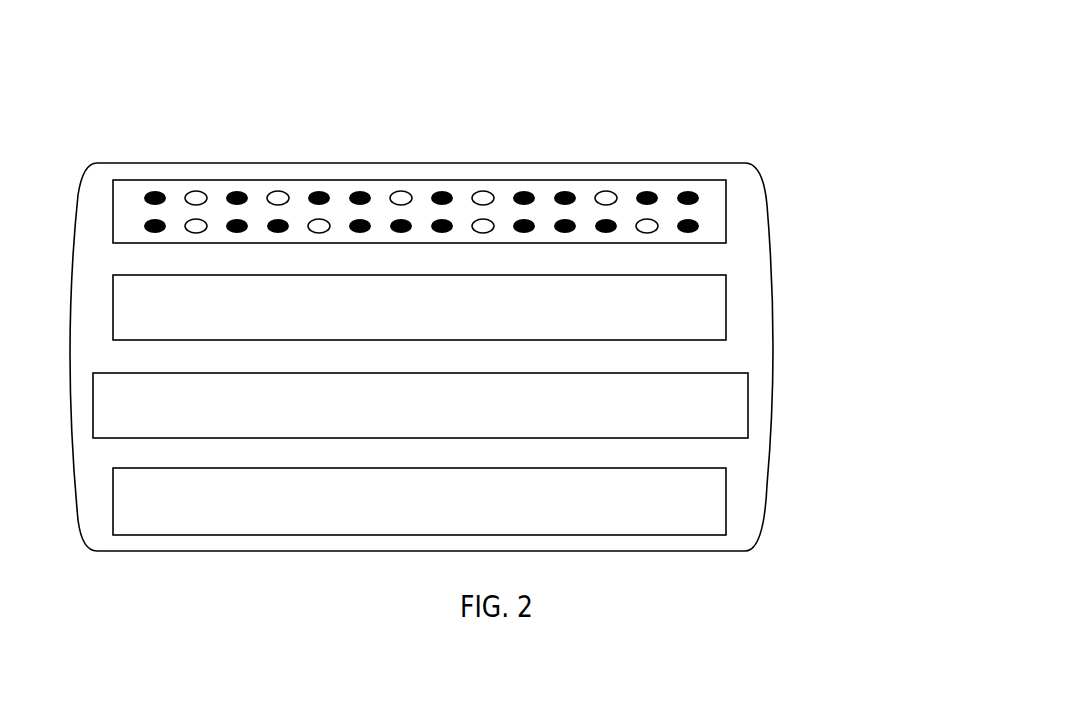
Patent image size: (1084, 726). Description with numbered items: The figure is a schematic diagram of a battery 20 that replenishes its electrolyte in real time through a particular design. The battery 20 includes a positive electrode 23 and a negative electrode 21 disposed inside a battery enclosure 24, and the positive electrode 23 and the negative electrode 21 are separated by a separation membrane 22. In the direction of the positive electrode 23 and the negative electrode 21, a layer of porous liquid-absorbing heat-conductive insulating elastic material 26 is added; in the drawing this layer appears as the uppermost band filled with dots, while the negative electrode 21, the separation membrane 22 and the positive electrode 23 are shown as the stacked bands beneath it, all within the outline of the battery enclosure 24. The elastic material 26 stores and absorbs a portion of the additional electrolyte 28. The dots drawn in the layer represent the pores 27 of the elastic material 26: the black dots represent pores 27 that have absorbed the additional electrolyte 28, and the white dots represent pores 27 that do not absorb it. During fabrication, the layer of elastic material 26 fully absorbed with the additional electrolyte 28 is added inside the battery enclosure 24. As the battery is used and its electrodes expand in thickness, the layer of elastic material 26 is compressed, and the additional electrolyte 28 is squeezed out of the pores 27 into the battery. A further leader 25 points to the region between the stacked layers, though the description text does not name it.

The battery 20 is at (364, 138).
The negative electrode 21 is at (727, 308).
The separation membrane 22 is at (748, 402).
The positive electrode 23 is at (726, 500).
The battery enclosure 24 is at (695, 163).
The gap region 25 is at (740, 353).
The porous liquid-absorbing heat-conductive insulating elastic material 26 is at (727, 212).
The pores 27 is at (484, 196).
The additional electrolyte 28 is at (566, 196).